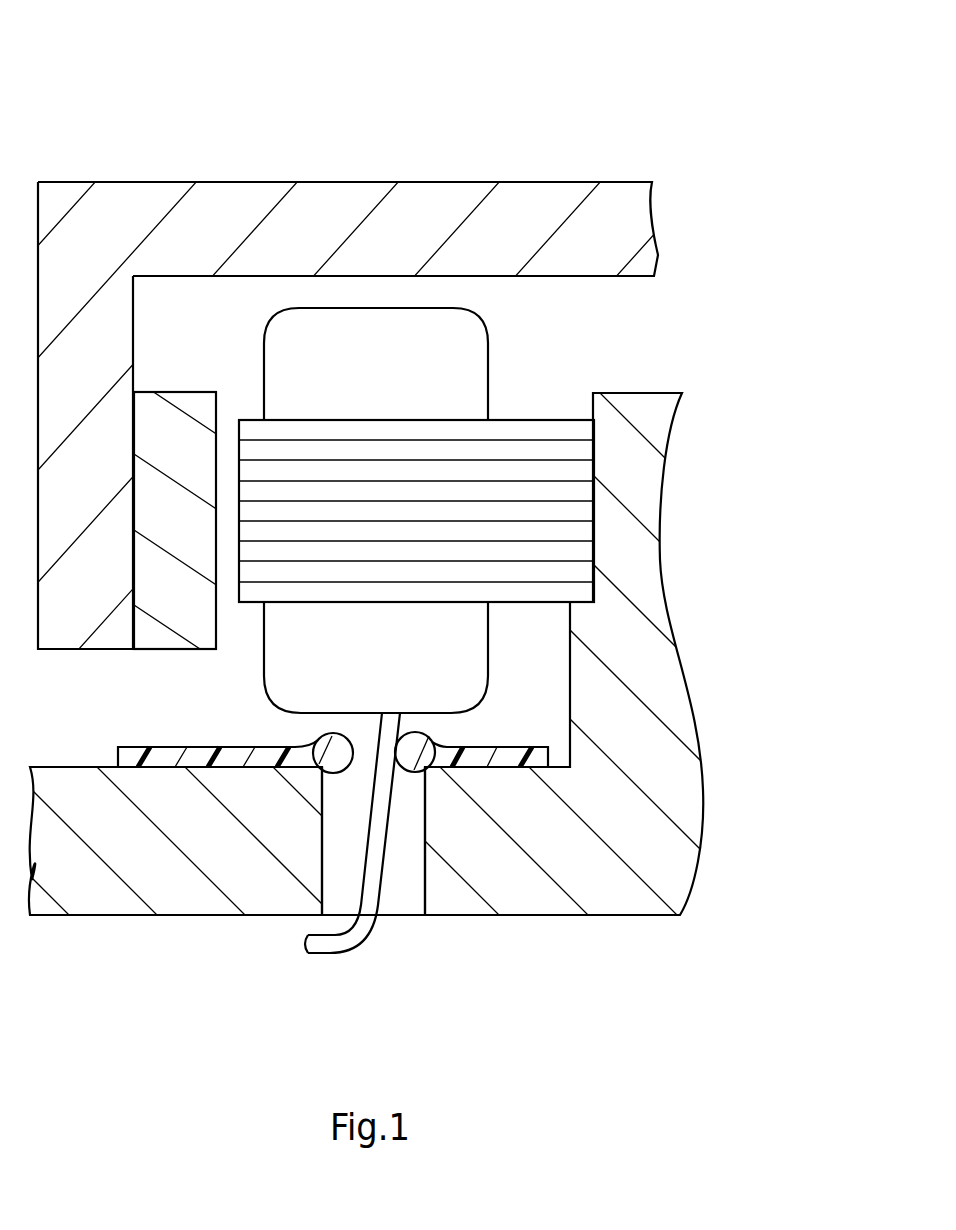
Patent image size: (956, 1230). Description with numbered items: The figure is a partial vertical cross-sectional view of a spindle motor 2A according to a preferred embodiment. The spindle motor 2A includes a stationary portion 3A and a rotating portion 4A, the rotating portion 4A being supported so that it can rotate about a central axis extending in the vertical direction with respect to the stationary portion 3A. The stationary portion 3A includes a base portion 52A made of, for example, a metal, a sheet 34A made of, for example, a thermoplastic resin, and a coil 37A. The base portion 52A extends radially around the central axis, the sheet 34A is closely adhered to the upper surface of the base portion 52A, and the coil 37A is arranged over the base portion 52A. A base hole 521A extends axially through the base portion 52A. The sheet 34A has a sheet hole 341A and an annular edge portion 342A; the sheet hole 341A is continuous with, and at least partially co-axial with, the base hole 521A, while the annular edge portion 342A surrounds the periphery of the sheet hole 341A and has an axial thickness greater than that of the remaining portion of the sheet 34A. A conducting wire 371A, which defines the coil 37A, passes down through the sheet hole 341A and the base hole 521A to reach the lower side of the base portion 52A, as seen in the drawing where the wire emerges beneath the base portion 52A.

The spindle motor 2A is at (178, 100).
The rotating portion 4A is at (530, 158).
The coil 37A is at (455, 350).
The stationary portion 3A is at (631, 940).
The base portion 52A is at (122, 853).
The base hole 521A is at (406, 892).
The sheet 34A is at (230, 758).
The sheet hole 341A is at (365, 740).
The annular edge portion 342A is at (417, 750).
The conducting wire 371A is at (380, 808).